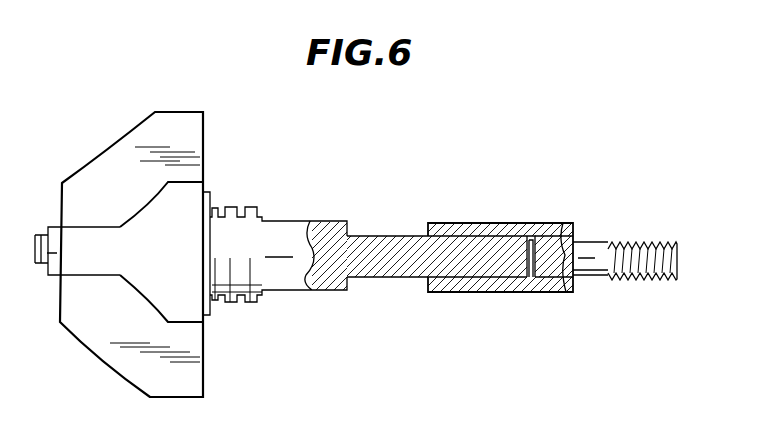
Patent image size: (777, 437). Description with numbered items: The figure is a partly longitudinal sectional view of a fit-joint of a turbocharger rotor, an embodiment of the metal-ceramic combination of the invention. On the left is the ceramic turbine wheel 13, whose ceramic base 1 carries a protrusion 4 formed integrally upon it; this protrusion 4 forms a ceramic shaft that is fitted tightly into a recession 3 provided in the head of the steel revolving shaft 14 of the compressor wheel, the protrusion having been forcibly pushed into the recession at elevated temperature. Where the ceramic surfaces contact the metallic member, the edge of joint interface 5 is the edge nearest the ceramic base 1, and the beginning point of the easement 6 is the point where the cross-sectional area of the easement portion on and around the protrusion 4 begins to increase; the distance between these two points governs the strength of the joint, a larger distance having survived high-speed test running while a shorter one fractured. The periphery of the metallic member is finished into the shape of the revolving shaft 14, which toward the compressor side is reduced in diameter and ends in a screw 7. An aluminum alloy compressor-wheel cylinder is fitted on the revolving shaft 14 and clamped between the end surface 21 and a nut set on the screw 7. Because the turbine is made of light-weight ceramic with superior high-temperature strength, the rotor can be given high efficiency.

The ceramic base 1 is at (282, 235).
The recession 3 is at (530, 238).
The protrusion 4 is at (385, 277).
The edge of joint interface 5 is at (430, 235).
The beginning point of the easement 6 is at (352, 235).
The screw 7 is at (652, 242).
The ceramic turbine wheel 13 is at (190, 375).
The revolving shaft 14 is at (597, 273).
The end surface 21 is at (575, 235).